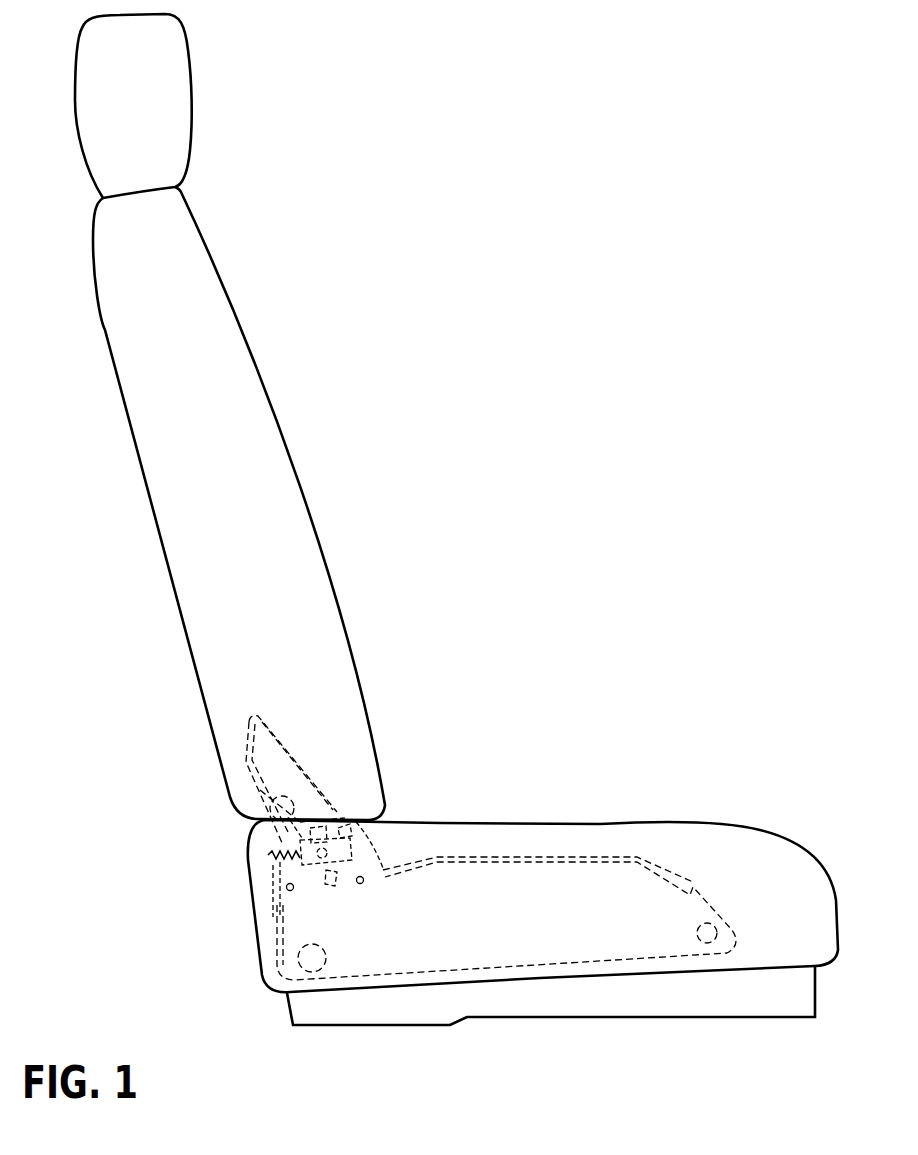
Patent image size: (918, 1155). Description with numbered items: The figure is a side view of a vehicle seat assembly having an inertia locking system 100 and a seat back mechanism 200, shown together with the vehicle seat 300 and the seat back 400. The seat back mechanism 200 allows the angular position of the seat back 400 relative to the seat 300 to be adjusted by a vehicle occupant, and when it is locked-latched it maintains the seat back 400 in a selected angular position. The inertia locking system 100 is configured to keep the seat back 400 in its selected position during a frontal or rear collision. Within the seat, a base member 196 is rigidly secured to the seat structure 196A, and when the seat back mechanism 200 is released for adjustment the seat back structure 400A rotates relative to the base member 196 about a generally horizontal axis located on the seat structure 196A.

The inertia locking system 100 is at (294, 873).
The base member 196 is at (277, 912).
The seat structure 196A is at (440, 858).
The seat back mechanism 200 is at (238, 763).
The vehicle seat 300 is at (548, 818).
The seat back 400 is at (178, 647).
The seat back structure 400A is at (252, 787).